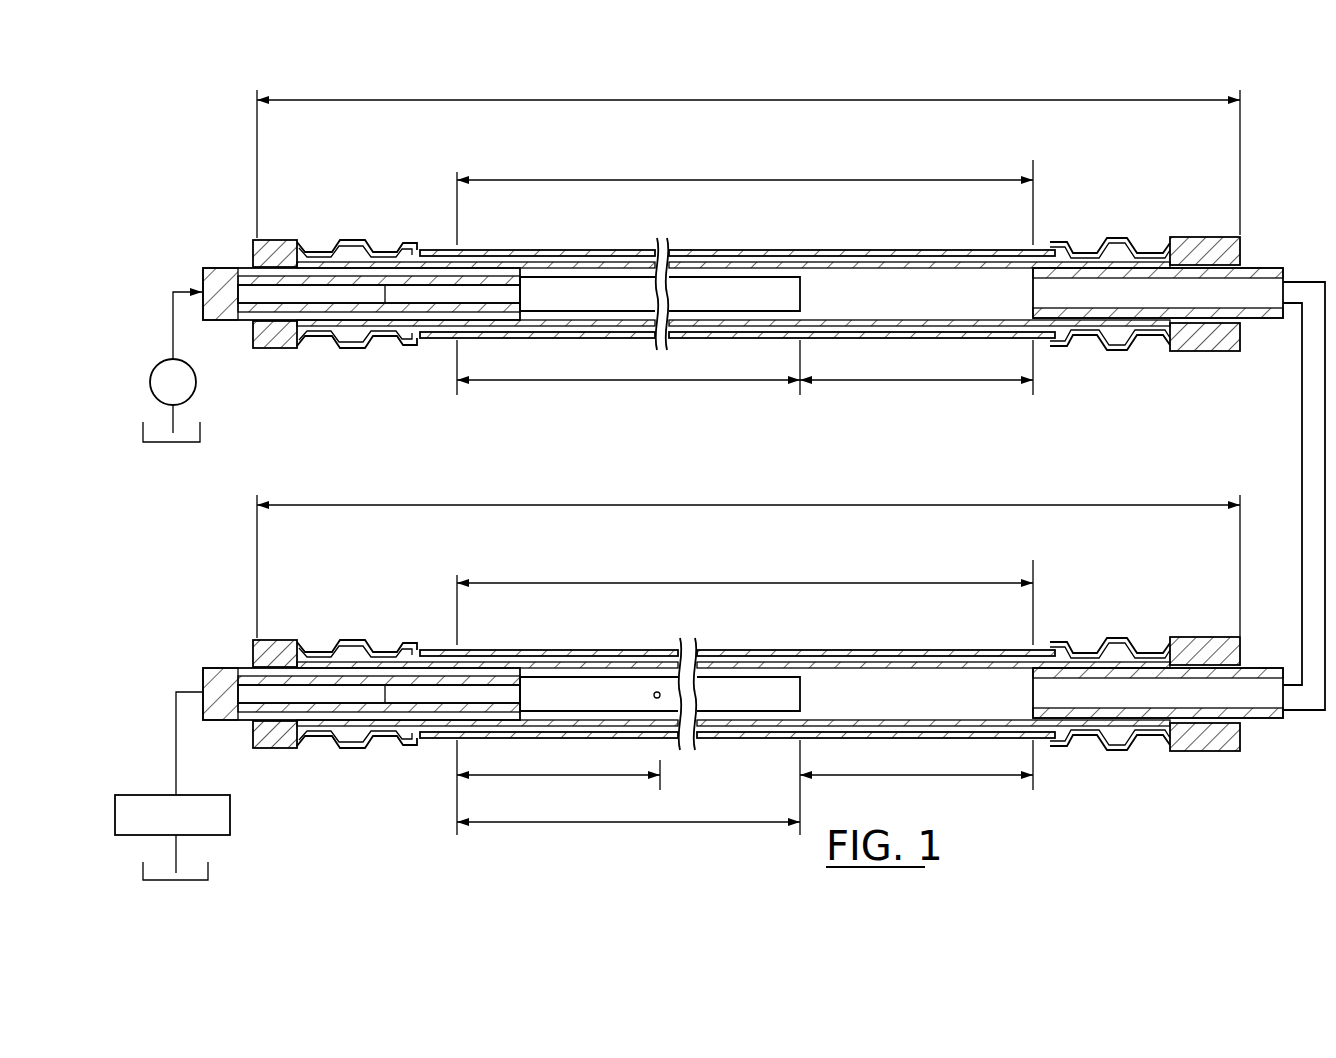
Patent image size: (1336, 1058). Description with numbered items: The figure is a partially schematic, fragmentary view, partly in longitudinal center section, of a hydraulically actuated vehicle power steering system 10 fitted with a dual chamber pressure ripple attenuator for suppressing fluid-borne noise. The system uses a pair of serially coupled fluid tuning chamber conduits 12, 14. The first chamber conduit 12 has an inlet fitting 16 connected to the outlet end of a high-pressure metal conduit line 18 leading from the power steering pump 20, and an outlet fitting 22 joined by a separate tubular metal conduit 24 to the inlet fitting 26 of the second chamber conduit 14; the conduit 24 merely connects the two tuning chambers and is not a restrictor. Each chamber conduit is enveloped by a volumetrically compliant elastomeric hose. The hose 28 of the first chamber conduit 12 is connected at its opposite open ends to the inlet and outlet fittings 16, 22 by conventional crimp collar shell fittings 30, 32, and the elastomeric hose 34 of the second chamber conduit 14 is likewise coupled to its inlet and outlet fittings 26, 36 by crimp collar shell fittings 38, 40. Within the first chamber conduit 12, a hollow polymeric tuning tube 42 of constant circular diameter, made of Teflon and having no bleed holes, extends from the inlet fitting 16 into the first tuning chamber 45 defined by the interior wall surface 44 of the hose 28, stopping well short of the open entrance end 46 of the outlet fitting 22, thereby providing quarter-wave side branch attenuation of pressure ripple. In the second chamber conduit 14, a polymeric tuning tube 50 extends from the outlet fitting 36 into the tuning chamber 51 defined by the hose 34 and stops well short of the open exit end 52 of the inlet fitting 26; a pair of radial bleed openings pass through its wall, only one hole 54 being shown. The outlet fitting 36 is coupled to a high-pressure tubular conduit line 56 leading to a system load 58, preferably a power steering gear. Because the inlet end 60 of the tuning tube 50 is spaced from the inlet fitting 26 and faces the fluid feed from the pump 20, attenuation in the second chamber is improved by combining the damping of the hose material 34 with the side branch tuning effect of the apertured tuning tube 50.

The power steering system 10 is at (195, 120).
The first chamber conduit 12 is at (240, 248).
The second chamber conduit 14 is at (240, 645).
The inlet fitting 16 is at (226, 320).
The high-pressure metal conduit line 18 is at (173, 318).
The power steering pump 20 is at (197, 386).
The outlet fitting 22 is at (1263, 265).
The tubular metal conduit 24 is at (1302, 398).
The inlet fitting 26 is at (1256, 724).
The hose 28 is at (832, 251).
The crimp collar shell fitting 30 is at (352, 242).
The crimp collar shell fitting 32 is at (1110, 240).
The elastomeric hose 34 is at (782, 651).
The outlet fitting 36 is at (226, 721).
The crimp collar shell fitting 38 is at (1118, 640).
The crimp collar shell fitting 40 is at (350, 641).
The tuning tube 42 is at (699, 276).
The interior wall surface 44 is at (878, 287).
The first tuning chamber 45 is at (922, 289).
The open entrance end 46 is at (1028, 290).
The tuning tube 50 is at (721, 676).
The tuning chamber 51 is at (902, 689).
The open exit end 52 is at (1030, 690).
The bleed hole 54 is at (653, 695).
The high-pressure tubular conduit line 56 is at (176, 738).
The load 58 is at (233, 805).
The inlet end 60 is at (802, 700).